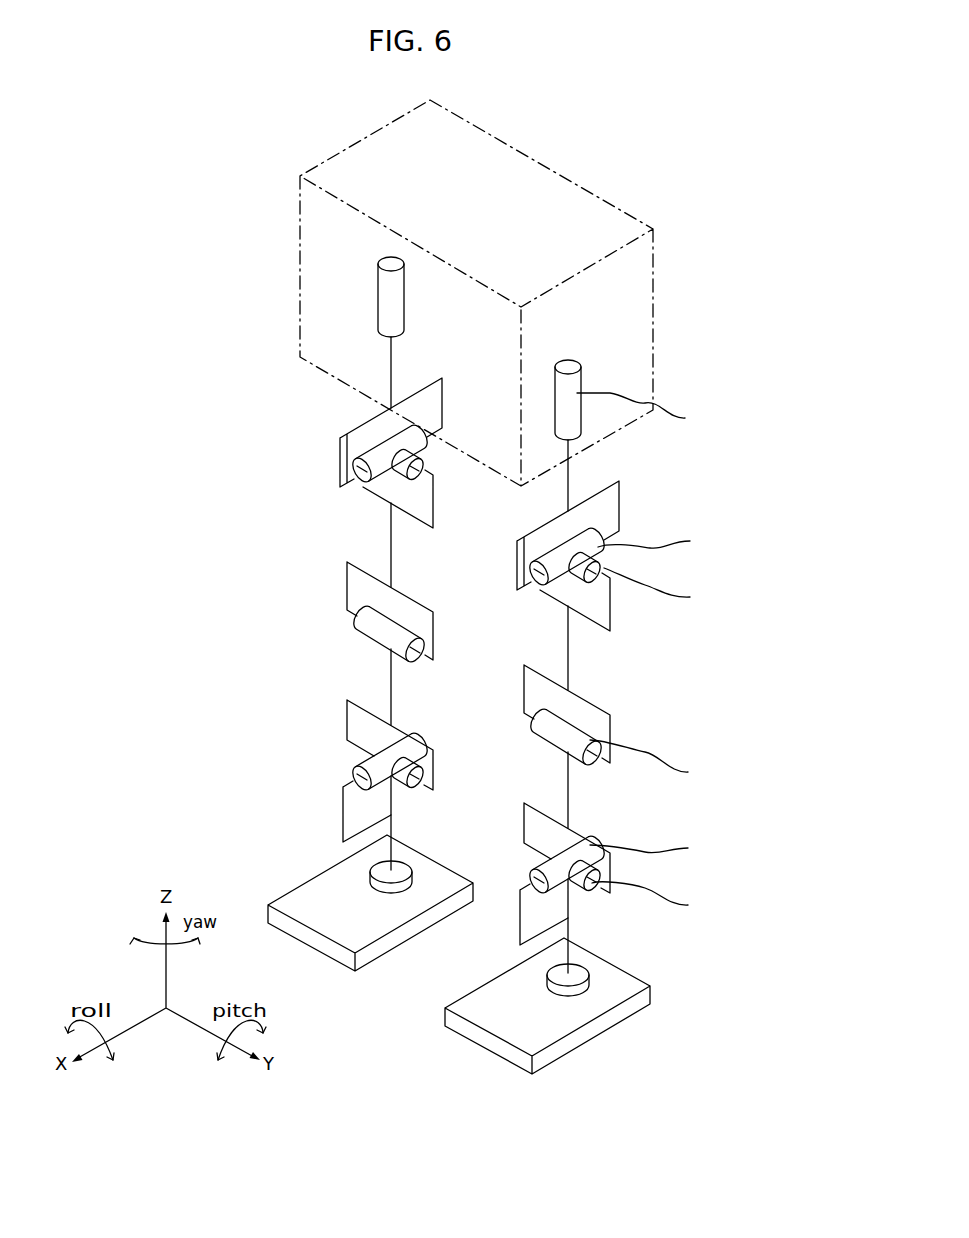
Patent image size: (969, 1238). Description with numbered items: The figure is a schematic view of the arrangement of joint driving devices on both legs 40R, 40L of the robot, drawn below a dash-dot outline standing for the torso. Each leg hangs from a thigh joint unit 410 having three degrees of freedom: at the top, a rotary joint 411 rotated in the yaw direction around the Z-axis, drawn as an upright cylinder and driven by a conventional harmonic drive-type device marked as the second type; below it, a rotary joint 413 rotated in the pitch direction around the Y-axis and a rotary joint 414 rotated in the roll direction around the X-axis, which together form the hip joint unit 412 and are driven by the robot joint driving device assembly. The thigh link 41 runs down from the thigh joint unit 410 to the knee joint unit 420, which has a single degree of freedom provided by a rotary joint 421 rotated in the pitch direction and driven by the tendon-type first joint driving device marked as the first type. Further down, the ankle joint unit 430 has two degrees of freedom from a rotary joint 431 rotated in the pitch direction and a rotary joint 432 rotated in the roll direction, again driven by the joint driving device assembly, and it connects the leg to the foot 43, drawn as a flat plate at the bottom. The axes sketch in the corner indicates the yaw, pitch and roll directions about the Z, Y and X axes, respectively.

The right leg 40R is at (252, 590).
The left leg 40L is at (671, 706).
The rotary joint rotated in the yaw direction 411 is at (383, 287).
The thigh joint unit 410 is at (370, 476).
The rotary joint rotated in the roll direction 414 is at (357, 462).
The rotary joint rotated in the pitch direction 413 is at (427, 467).
The hip joint unit 412 is at (414, 504).
The thigh link 41 is at (391, 542).
The knee joint unit 420 is at (377, 643).
The rotary joint rotated in the pitch direction 421 is at (403, 633).
The ankle joint unit 430 is at (364, 774).
The rotary joint rotated in the roll direction 432 is at (410, 748).
The rotary joint rotated in the pitch direction 431 is at (417, 783).
The foot 43 is at (293, 898).